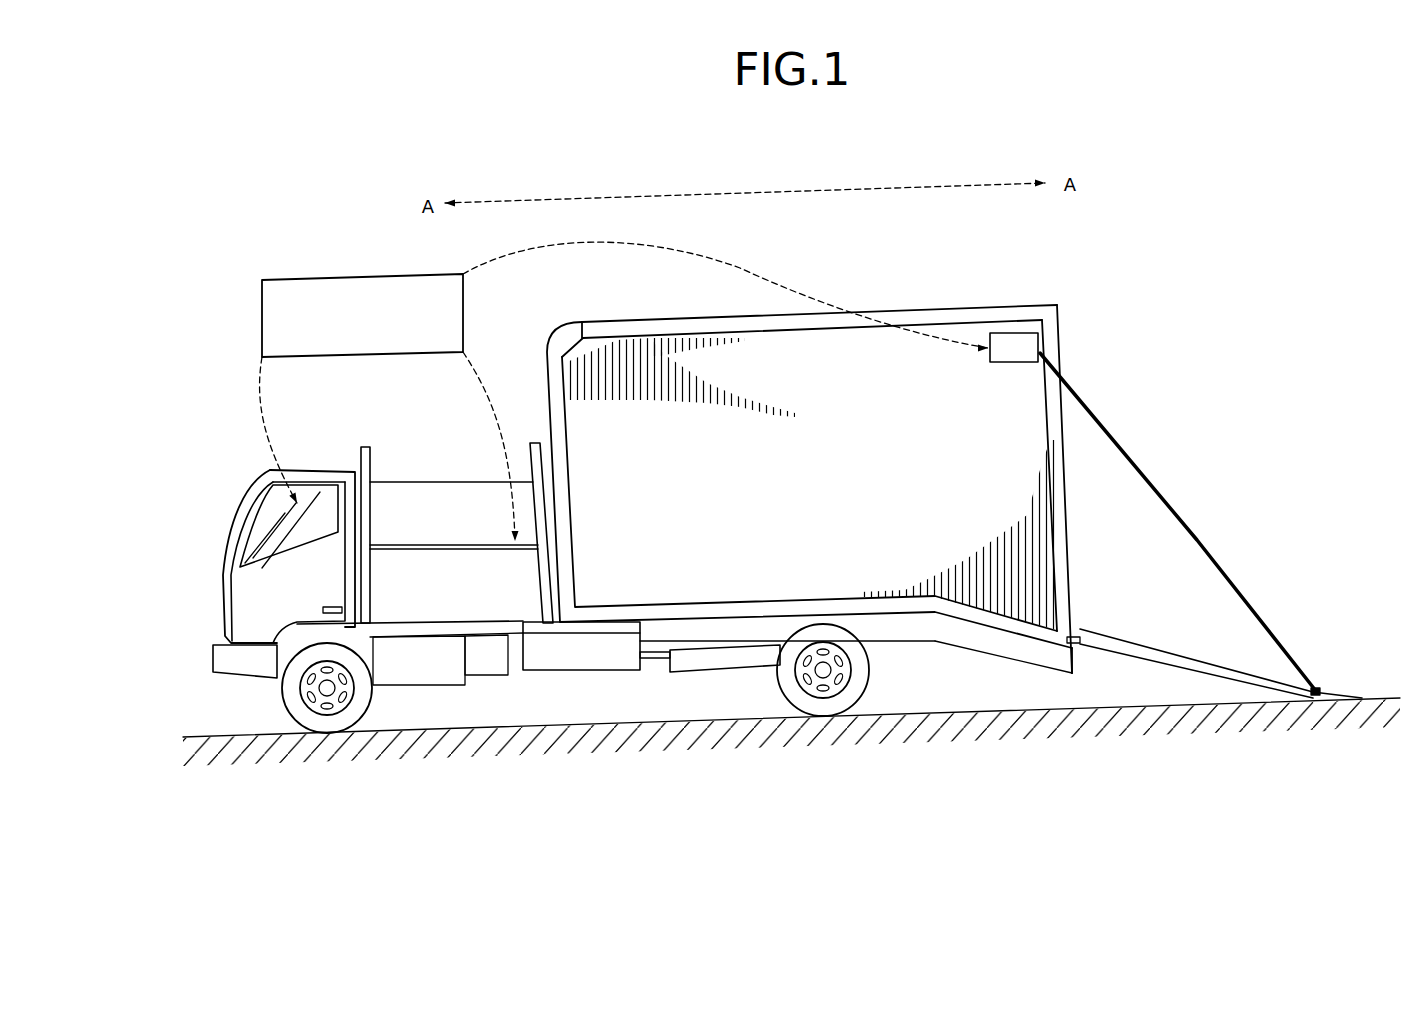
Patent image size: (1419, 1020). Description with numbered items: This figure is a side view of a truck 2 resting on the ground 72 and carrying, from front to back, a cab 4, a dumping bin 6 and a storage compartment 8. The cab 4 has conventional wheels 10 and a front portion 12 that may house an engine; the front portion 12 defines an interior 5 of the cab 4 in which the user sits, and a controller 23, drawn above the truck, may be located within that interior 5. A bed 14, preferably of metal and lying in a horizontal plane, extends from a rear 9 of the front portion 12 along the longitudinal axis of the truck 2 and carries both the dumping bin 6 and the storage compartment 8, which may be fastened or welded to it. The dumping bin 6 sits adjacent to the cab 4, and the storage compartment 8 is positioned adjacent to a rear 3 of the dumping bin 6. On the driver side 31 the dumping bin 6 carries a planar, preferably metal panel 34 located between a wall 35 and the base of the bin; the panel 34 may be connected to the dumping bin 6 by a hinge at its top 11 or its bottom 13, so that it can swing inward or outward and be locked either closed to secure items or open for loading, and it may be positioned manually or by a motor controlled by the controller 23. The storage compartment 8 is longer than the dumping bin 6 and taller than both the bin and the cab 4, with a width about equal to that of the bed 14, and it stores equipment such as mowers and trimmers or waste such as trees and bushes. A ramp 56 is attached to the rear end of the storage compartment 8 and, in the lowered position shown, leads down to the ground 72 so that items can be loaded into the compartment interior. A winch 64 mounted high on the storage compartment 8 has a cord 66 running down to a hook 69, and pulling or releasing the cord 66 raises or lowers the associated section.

The truck 2 is at (212, 437).
The controller 23 is at (336, 277).
The ground 72 is at (1383, 687).
The cab 4 is at (206, 590).
The interior 5 is at (258, 530).
The front portion 12 is at (222, 634).
The rear 9 is at (461, 519).
The dumping bin 6 is at (361, 455).
The rear 3 is at (560, 518).
The wall 35 is at (443, 500).
The top 11 is at (512, 546).
The panel 34 is at (437, 568).
The bottom 13 is at (530, 634).
The bed 14 is at (597, 672).
The wheels 10 is at (370, 700).
The driver side 31 is at (809, 462).
The storage compartment 8 is at (923, 300).
The winch 64 is at (1013, 362).
The cord 66 is at (1179, 518).
The hook 69 is at (1316, 688).
The ramp 56 is at (1130, 658).